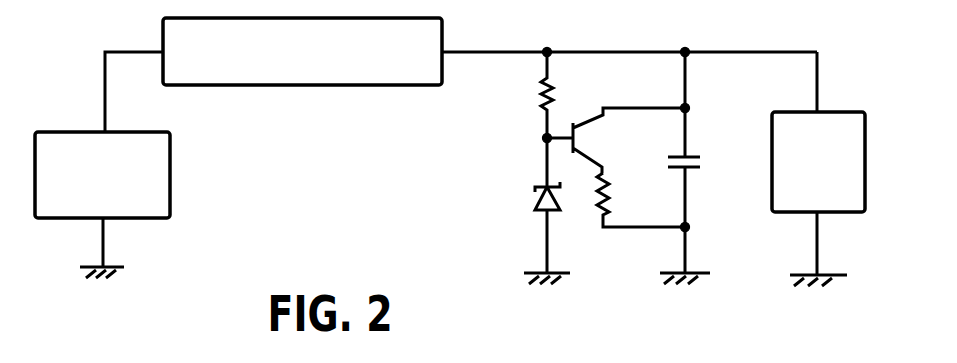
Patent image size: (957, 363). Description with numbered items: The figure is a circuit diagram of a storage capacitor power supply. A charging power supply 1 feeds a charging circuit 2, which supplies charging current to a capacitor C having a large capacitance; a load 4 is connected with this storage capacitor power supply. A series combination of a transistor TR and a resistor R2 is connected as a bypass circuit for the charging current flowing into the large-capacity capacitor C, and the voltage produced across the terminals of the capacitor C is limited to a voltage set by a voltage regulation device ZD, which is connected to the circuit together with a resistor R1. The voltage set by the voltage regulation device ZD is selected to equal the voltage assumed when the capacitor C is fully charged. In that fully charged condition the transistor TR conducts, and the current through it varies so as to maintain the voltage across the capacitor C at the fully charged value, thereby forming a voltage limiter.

The charging power supply 1 is at (170, 176).
The charging circuit 2 is at (337, 85).
The load 4 is at (865, 166).
The resistor R1 is at (565, 113).
The resistor R2 is at (605, 200).
The transistor TR is at (585, 143).
The voltage regulation device ZD is at (528, 209).
The capacitor C is at (691, 168).